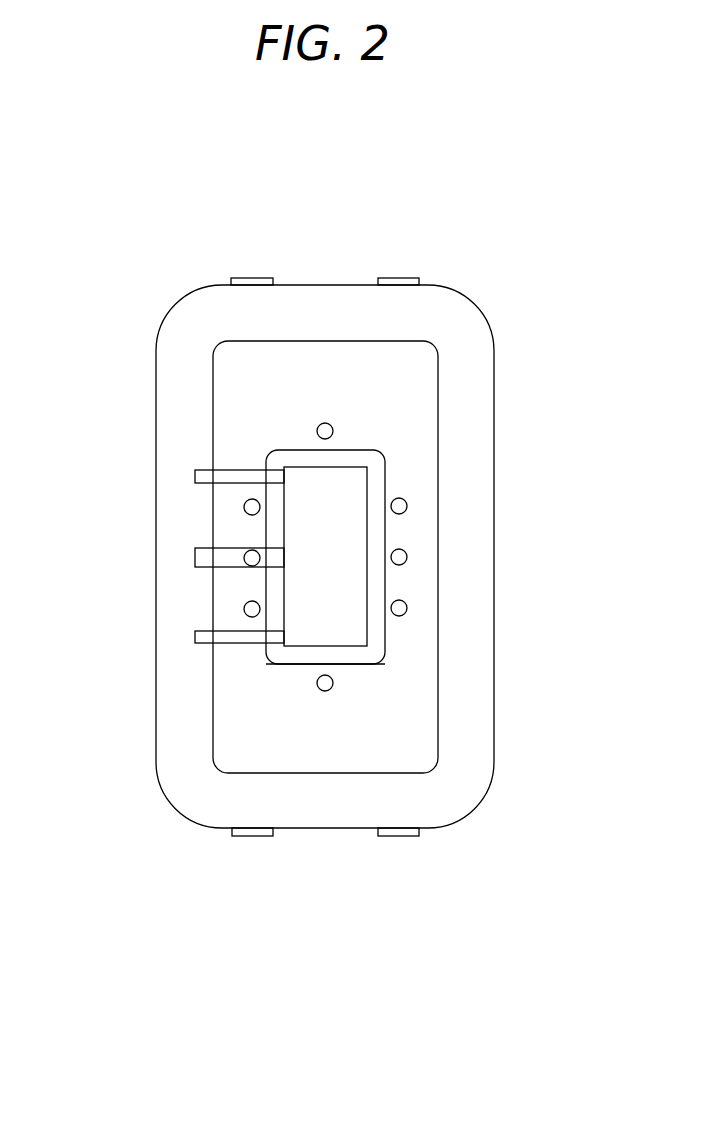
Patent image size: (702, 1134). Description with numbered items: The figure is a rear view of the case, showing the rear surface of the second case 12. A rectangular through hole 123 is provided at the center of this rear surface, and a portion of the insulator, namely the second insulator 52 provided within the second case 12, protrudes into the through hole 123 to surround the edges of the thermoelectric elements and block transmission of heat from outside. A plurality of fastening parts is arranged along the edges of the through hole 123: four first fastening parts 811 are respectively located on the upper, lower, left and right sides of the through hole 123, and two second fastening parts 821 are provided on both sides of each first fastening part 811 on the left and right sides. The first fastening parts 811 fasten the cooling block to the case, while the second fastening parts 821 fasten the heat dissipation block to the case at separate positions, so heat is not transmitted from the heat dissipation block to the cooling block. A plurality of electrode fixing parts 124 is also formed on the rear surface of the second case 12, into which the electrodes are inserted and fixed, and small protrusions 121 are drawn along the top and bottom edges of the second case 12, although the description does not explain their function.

The second case 12 is at (465, 312).
The coupling protrusion 121 is at (396, 278).
The through hole 123 is at (313, 660).
The electrode fixing parts 124 is at (237, 474).
The second insulator 52 is at (298, 460).
The first fastening parts 811 is at (333, 430).
The second fastening parts 821 is at (244, 507).